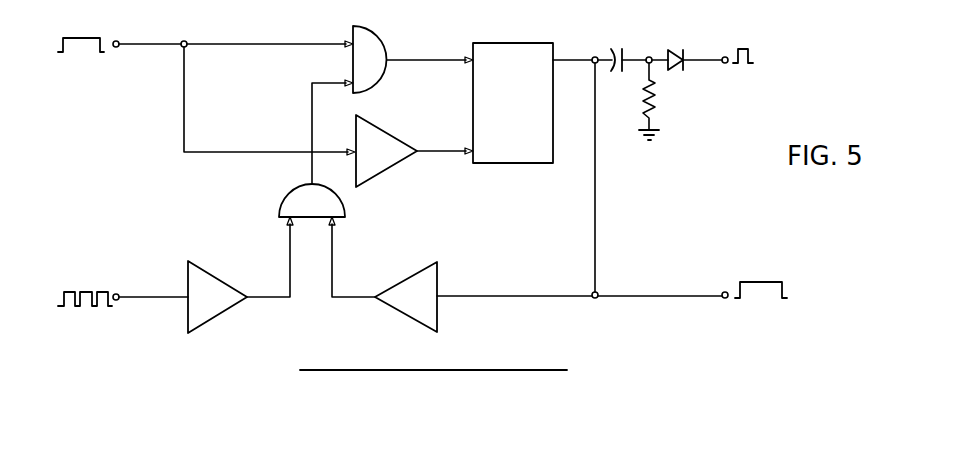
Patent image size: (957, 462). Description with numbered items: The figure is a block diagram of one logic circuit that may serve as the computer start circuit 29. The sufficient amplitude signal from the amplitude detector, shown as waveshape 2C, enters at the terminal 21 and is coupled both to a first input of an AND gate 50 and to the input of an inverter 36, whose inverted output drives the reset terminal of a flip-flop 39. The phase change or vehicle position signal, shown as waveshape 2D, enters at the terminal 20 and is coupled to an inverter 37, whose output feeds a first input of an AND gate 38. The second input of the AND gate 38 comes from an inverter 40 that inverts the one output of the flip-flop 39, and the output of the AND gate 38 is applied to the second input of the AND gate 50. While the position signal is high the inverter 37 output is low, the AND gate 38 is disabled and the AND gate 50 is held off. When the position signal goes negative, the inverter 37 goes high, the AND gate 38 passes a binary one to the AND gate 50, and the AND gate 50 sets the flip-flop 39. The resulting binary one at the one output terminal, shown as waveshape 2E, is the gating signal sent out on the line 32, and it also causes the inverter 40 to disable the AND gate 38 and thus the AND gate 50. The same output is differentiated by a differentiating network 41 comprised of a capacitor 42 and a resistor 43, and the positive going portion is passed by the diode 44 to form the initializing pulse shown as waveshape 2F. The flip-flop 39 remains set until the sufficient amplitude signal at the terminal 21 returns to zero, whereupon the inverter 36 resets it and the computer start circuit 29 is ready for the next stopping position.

The computer start circuit 29 is at (503, 222).
The terminal 21 is at (116, 41).
The waveshape 2C is at (117, 47).
The AND gate 50 is at (385, 50).
The inverter 36 is at (383, 133).
The flip-flop 39 is at (503, 43).
The capacitor 42 is at (615, 50).
The differentiating network 41 is at (660, 45).
The diode 44 is at (676, 50).
The waveshape 2F is at (724, 56).
The resistor 43 is at (640, 100).
The AND gate 38 is at (283, 200).
The inverter 37 is at (216, 282).
The terminal 20 is at (125, 281).
The waveshape 2D is at (118, 301).
The inverter 40 is at (404, 279).
The line 32 is at (661, 294).
The waveshape 2E is at (724, 290).